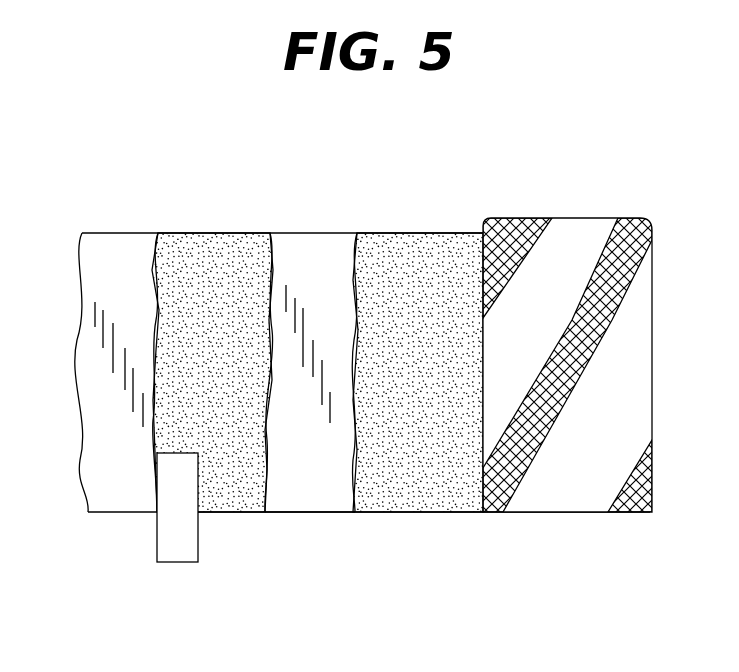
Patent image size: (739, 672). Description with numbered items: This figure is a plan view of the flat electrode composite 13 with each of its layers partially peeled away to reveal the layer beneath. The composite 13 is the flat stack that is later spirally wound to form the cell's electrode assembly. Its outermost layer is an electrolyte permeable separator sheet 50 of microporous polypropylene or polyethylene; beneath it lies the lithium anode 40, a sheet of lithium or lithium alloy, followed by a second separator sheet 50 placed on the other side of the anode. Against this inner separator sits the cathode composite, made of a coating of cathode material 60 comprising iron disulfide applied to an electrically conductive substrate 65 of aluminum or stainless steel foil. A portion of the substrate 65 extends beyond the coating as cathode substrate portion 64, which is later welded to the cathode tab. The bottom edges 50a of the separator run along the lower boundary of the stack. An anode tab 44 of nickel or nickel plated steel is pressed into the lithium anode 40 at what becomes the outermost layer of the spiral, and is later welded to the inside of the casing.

The flat electrode composite 13 is at (153, 148).
The separator sheet 50 is at (98, 250).
The lithium anode 40 is at (212, 263).
The cathode material 60 is at (413, 255).
The anode tab 44 is at (185, 562).
The cathode substrate portion 64 is at (623, 218).
The substrate 65 is at (585, 497).
The bottom edges of separator 50a is at (312, 503).